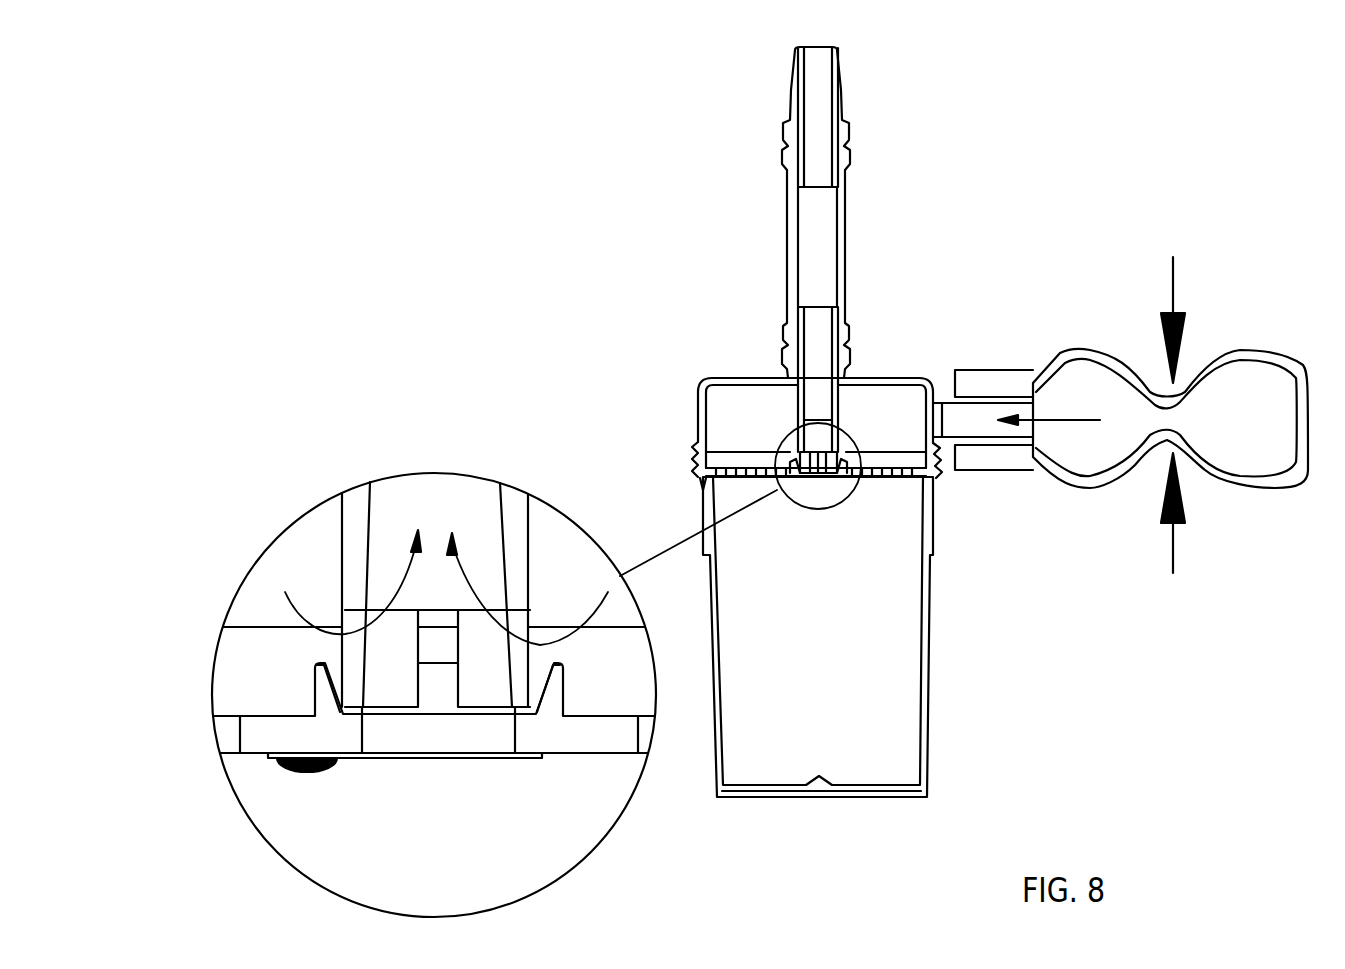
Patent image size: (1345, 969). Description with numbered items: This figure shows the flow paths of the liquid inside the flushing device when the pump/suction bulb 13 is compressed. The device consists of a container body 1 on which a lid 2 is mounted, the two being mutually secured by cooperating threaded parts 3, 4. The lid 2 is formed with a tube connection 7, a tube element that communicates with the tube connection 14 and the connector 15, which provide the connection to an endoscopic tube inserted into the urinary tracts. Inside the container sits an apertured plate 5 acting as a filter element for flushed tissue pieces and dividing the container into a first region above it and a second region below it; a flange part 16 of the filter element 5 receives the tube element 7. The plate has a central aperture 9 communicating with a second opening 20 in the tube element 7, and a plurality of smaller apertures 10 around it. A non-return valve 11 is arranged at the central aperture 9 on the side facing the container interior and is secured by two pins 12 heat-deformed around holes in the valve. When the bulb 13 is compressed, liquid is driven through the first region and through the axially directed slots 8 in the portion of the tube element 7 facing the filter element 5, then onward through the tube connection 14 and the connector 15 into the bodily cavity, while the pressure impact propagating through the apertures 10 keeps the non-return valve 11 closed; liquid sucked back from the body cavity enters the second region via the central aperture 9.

The container body 1 is at (930, 717).
The lid 2 is at (887, 380).
The threaded part 3 is at (695, 467).
The threaded part 4 is at (702, 482).
The apertured plate 5 is at (722, 470).
The tube connection 7 is at (797, 335).
The slots 8 is at (867, 472).
The central aperture 9 is at (857, 478).
The smaller apertures 10 is at (893, 480).
The non-return valve 11 is at (823, 480).
The pins 12 is at (790, 478).
The pump/suction means 13 is at (1052, 373).
The tube connection 14 is at (840, 211).
The connector 15 is at (838, 99).
The flange part 16 is at (547, 690).
The second opening 20 is at (388, 688).